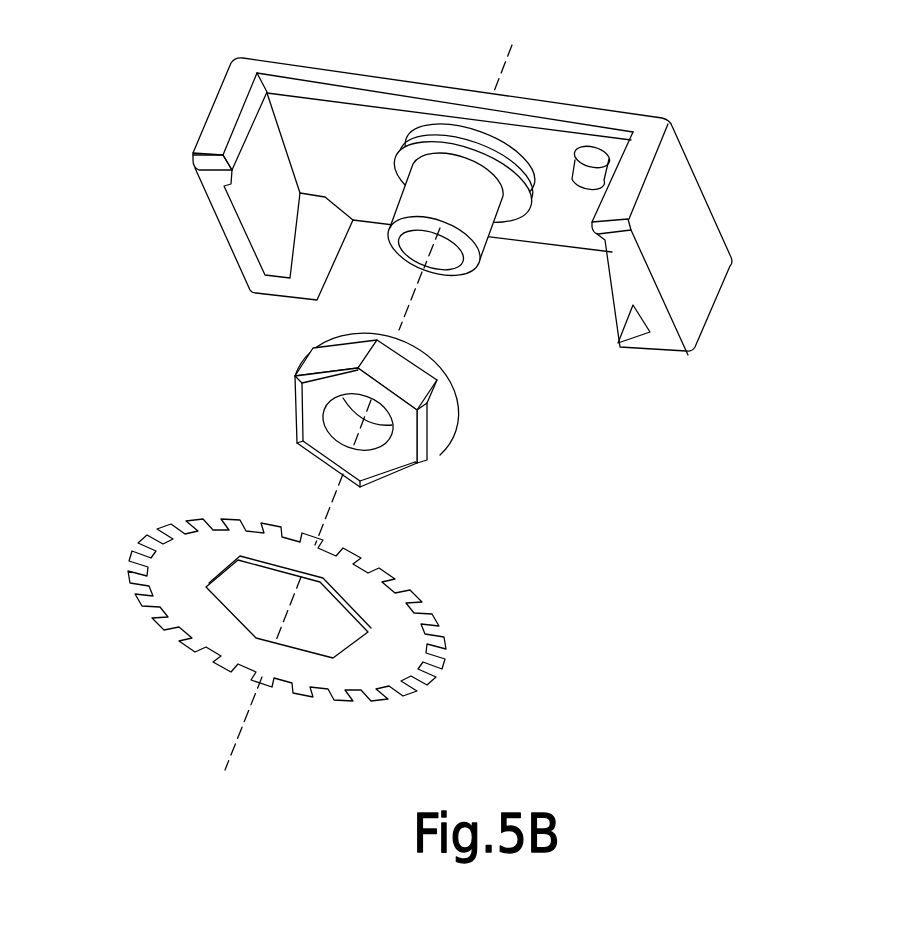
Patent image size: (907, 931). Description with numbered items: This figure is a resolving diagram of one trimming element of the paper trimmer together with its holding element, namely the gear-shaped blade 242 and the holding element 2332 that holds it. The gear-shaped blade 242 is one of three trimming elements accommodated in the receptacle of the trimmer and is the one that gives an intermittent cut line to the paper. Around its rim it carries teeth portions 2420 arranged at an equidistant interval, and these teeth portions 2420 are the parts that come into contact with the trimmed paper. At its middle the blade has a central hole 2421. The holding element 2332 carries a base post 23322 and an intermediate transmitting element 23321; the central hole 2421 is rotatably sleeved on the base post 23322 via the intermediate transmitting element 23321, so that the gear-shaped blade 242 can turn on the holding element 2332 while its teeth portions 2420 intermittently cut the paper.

The holding element 2332 is at (529, 280).
The base post 23322 is at (537, 174).
The intermediate transmitting element 23321 is at (402, 447).
The gear-shaped blade 242 is at (314, 638).
The teeth portions 2420 is at (395, 591).
The central hole 2421 is at (245, 598).